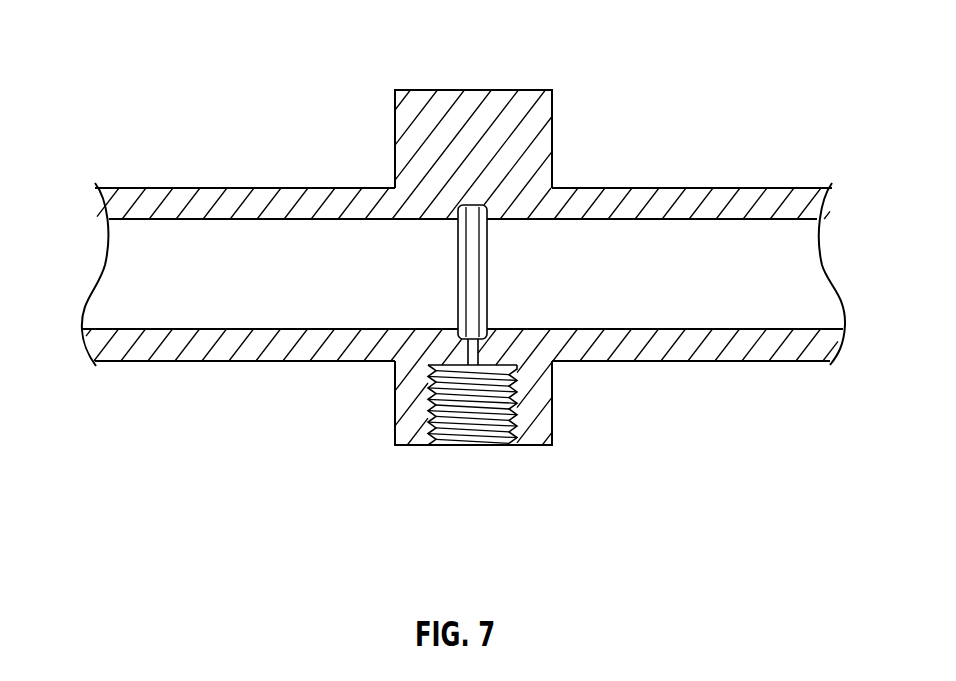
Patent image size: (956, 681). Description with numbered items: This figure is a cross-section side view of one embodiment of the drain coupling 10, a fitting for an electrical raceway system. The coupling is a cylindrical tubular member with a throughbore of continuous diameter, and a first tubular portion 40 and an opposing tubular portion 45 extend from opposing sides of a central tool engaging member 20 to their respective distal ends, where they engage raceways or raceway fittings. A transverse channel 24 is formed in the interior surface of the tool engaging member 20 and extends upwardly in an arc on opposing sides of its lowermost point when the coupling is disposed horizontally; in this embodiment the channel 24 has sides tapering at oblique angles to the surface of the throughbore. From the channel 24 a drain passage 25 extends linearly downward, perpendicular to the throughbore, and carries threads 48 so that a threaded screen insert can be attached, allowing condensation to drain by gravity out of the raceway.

The drain coupling 10 is at (105, 66).
The tool engaging member 20 is at (482, 90).
The channel 24 is at (473, 267).
The drain passage 25 is at (475, 345).
The first tubular portion 40 is at (245, 187).
The opposing tubular portion 45 is at (732, 188).
The threads 48 is at (428, 408).